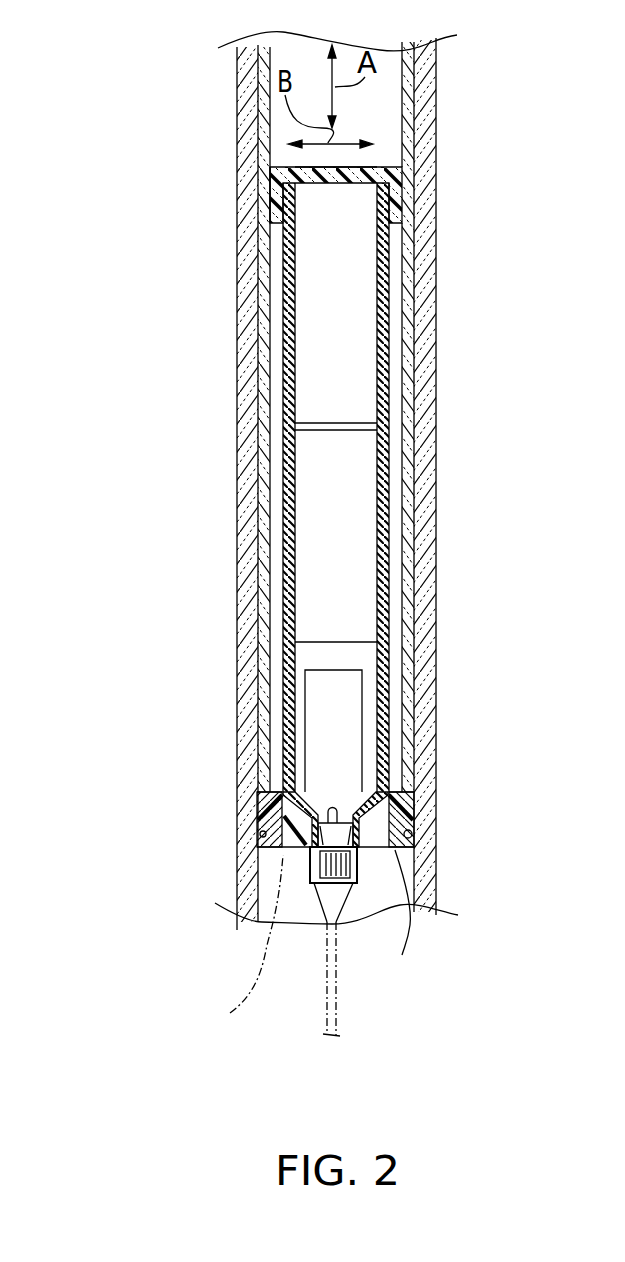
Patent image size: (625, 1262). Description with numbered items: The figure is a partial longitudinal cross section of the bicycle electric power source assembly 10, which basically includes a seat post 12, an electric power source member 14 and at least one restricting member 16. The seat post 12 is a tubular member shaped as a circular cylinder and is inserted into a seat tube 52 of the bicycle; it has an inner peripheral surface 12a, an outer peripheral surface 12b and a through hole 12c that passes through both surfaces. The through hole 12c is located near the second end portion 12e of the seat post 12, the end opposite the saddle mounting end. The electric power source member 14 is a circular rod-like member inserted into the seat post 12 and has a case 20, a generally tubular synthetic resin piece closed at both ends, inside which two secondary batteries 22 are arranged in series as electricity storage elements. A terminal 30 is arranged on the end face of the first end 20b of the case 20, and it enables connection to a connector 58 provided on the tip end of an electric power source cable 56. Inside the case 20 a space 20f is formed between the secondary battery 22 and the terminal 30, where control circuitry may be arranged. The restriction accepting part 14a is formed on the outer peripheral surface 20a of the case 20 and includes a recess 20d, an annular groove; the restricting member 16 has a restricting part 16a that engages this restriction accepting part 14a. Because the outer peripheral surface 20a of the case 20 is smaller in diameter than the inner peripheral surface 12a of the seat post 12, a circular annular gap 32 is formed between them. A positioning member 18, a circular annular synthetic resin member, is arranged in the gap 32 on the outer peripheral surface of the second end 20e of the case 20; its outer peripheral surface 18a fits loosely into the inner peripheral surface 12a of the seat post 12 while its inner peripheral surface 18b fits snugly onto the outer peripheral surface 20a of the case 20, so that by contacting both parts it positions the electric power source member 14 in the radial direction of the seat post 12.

The bicycle electric power source assembly 10 is at (423, 553).
The seat post 12 is at (420, 468).
The inner peripheral surface 12a is at (396, 700).
The outer peripheral surface 12b is at (414, 620).
The through hole 12c is at (276, 845).
The second end portion 12e is at (406, 926).
The electric power source member 14 is at (397, 432).
The restriction accepting part 14a is at (395, 830).
The restricting member 16 is at (257, 800).
The restricting part 16a is at (338, 792).
The positioning member 18 is at (403, 173).
The outer peripheral surface 18a is at (280, 200).
The inner peripheral surface 18b is at (293, 167).
The case 20 is at (275, 376).
The outer peripheral surface 20a is at (408, 307).
The first end 20b is at (308, 848).
The recess 20d is at (265, 828).
The second end 20e is at (377, 167).
The space 20f is at (320, 658).
The secondary battery 22 is at (320, 266).
The terminal 30 is at (315, 890).
The gap 32 is at (393, 290).
The seat tube 52 is at (432, 352).
The electric power source cable 56 is at (340, 1015).
The connector 58 is at (236, 953).